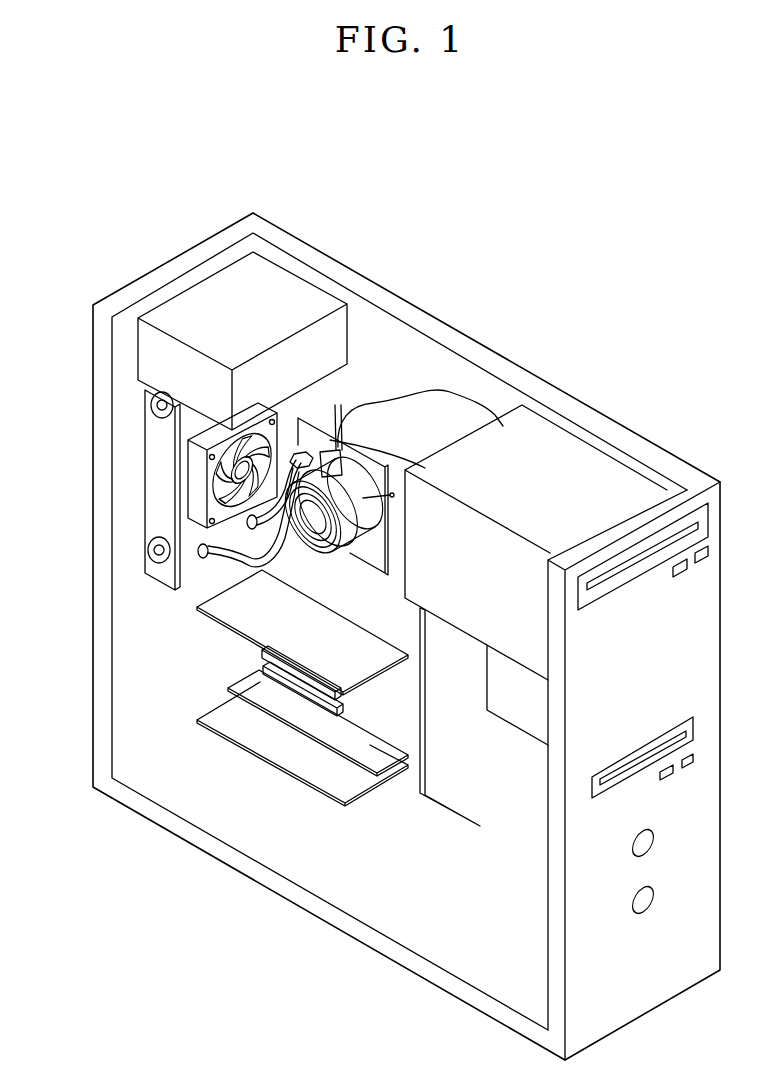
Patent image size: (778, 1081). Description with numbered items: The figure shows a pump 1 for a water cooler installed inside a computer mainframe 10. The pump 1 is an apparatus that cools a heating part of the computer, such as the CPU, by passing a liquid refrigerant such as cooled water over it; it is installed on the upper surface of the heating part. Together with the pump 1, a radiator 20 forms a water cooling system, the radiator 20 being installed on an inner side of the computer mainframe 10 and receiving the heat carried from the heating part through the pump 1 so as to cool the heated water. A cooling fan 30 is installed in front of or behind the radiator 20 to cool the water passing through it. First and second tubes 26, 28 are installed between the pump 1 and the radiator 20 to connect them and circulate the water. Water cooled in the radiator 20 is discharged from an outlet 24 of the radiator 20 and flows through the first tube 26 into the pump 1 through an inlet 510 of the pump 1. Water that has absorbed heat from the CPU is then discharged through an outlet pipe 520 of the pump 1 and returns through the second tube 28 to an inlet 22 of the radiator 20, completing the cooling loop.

The pump 1 is at (296, 556).
The computer mainframe 10 is at (490, 296).
The radiator 20 is at (157, 482).
The inlet 22 is at (246, 522).
The outlet 24 is at (198, 552).
The first tube 26 is at (205, 561).
The second tube 28 is at (251, 529).
The cooling fan 30 is at (203, 453).
The inlet 510 is at (345, 447).
The outlet pipe 520 is at (322, 450).